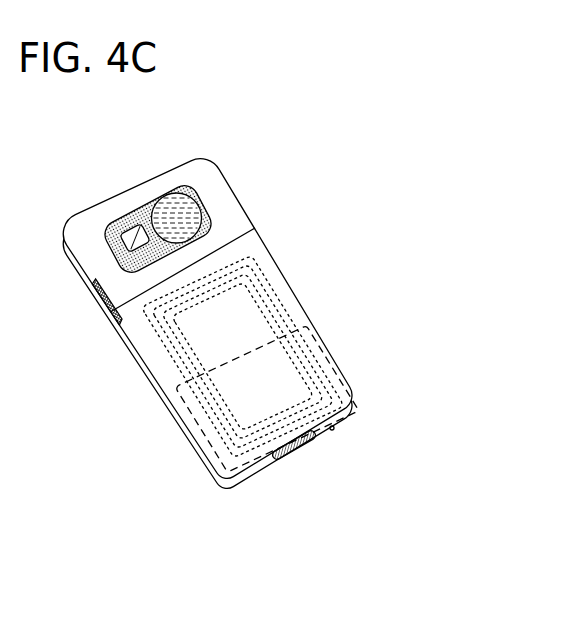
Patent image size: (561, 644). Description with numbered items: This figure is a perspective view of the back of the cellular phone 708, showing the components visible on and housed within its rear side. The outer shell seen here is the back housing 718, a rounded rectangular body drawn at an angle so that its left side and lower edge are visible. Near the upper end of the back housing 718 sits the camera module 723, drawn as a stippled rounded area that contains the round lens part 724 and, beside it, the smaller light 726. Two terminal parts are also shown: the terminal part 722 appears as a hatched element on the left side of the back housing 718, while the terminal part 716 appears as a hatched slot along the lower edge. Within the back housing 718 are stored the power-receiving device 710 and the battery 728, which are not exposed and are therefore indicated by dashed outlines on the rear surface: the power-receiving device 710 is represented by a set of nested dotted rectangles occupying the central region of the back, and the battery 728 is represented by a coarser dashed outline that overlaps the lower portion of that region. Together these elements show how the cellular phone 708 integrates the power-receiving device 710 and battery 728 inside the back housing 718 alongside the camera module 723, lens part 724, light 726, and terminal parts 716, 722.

The cellular phone 708 is at (239, 342).
The power-receiving device 710 is at (270, 296).
The terminal part 716 is at (299, 451).
The back housing 718 is at (150, 365).
The terminal part 722 is at (101, 298).
The camera module 723 is at (190, 166).
The lens part 724 is at (204, 164).
The light 726 is at (128, 218).
The battery 728 is at (325, 348).